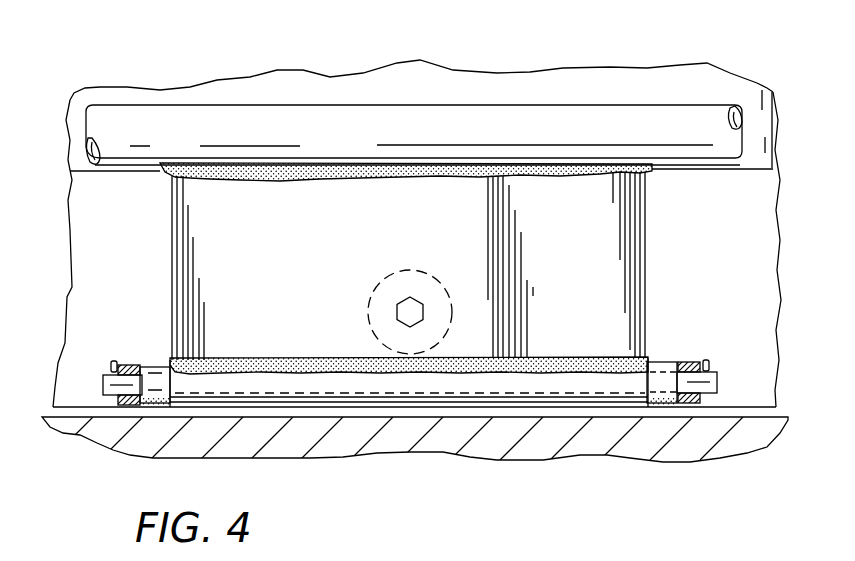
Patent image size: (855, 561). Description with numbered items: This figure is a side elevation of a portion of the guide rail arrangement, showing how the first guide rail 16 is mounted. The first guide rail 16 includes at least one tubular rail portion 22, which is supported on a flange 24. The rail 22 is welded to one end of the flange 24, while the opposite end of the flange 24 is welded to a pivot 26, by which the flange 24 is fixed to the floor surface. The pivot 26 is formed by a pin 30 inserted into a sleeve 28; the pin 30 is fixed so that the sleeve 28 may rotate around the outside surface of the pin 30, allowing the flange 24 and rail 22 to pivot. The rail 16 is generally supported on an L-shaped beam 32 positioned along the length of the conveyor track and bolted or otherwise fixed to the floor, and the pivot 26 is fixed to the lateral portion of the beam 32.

The first guide rail 16 is at (403, 89).
The tubular rail portion 22 is at (558, 117).
The flange 24 is at (635, 254).
The pivot 26 is at (515, 388).
The sleeve 28 is at (667, 370).
The pin 30 is at (707, 383).
The L-shaped beam 32 is at (90, 263).